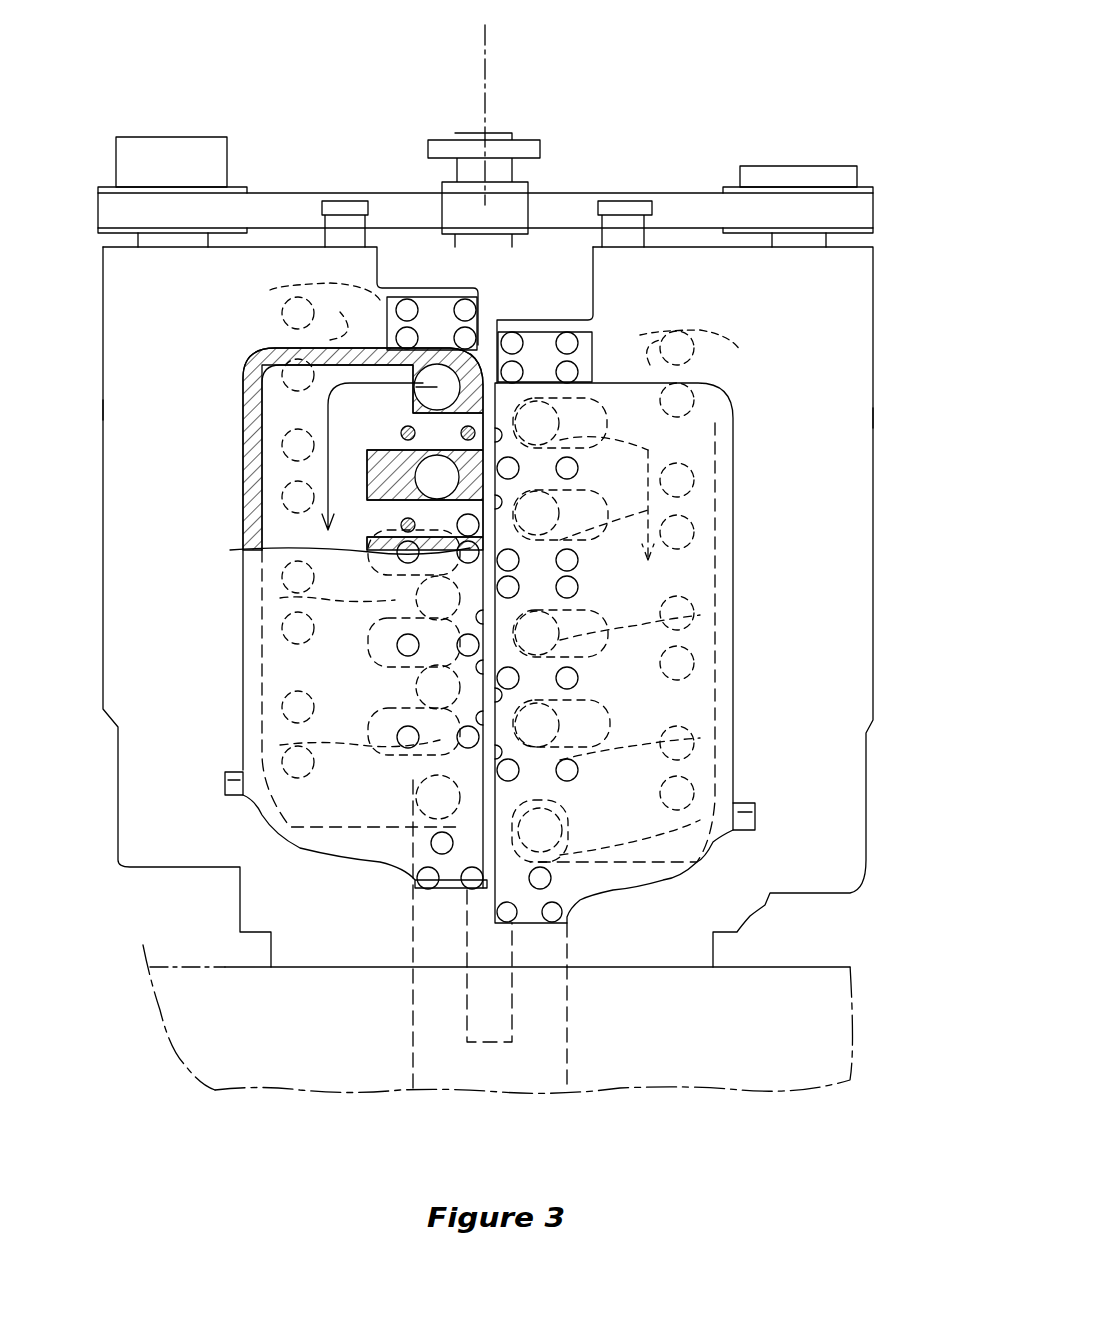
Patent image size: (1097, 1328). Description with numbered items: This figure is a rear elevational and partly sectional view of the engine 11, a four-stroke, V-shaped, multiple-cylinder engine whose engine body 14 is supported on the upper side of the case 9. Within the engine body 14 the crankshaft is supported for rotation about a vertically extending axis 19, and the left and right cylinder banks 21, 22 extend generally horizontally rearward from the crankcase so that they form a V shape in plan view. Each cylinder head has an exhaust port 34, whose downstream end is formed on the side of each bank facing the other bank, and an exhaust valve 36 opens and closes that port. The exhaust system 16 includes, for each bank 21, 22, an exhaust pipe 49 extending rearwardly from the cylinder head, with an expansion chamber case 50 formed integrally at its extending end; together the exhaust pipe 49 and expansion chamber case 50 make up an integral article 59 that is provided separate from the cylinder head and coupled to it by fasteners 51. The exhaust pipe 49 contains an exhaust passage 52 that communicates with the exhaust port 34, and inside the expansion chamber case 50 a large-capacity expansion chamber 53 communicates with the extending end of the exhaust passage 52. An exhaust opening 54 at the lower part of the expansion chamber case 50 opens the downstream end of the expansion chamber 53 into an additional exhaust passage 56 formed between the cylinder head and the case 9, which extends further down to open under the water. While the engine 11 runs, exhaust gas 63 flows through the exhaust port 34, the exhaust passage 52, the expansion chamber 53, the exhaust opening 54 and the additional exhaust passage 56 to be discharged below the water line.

The case 9 is at (790, 1050).
The engine 11 is at (784, 39).
The engine body 14 is at (800, 108).
The exhaust system 16 is at (781, 558).
The axis 19 is at (500, 60).
The left cylinder bank 21 is at (89, 406).
The right cylinder bank 22 is at (881, 406).
The exhaust port 34 is at (214, 667).
The exhaust valve 36 is at (214, 728).
The exhaust pipe 49 is at (377, 347).
The expansion chamber case 50 is at (256, 374).
The fastener 51 is at (370, 560).
The exhaust passage 52 is at (540, 440).
The expansion chamber 53 is at (290, 413).
The exhaust opening 54 is at (412, 810).
The additional exhaust passage 56 is at (537, 1058).
The integral article 59 is at (167, 290).
The exhaust gas 63 is at (305, 495).